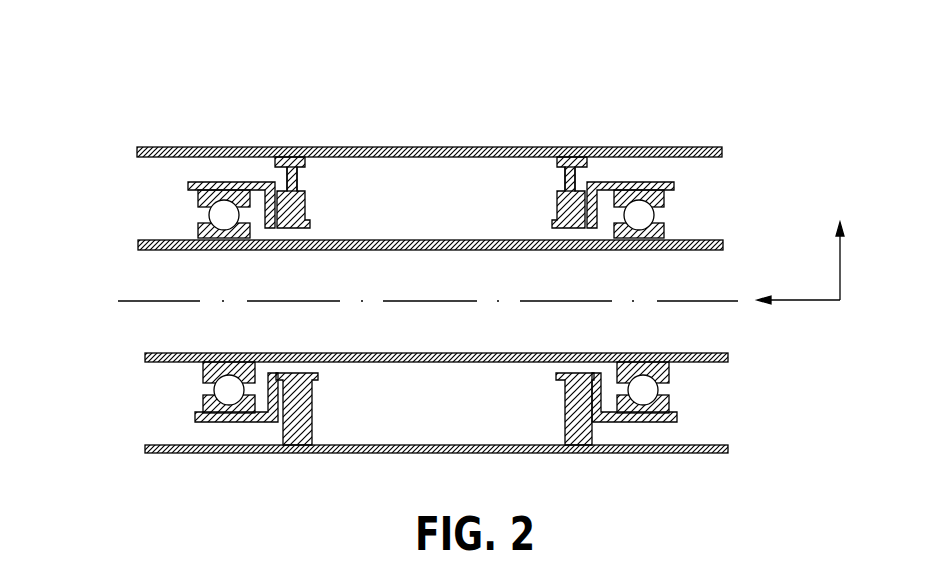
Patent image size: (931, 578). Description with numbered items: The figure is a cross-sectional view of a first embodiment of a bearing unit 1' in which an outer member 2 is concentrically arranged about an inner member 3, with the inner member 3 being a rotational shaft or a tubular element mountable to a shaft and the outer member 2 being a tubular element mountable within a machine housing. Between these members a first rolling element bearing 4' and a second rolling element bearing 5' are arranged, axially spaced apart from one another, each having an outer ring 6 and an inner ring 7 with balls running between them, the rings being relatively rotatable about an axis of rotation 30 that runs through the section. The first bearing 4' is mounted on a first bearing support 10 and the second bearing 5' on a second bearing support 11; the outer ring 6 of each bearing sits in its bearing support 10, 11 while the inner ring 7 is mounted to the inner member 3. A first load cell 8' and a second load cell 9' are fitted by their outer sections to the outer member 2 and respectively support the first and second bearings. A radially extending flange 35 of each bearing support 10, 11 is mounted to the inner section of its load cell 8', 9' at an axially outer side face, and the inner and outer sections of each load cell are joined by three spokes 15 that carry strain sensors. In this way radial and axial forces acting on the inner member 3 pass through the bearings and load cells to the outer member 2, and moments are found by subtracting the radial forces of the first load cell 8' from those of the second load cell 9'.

The bearing unit 1' is at (455, 253).
The outer member 2 is at (182, 147).
The inner member 3 is at (710, 240).
The first rolling element bearing 4' is at (168, 205).
The second rolling element bearing 5' is at (692, 207).
The outer ring 6 is at (197, 203).
The inner ring 7 is at (197, 234).
The first load cell 8' is at (335, 164).
The second load cell 9' is at (530, 163).
The first bearing support 10 is at (205, 182).
The second bearing support 11 is at (650, 180).
The spokes 15 is at (305, 172).
The axis of rotation 30 is at (150, 301).
The radially extending flange 35 is at (312, 400).